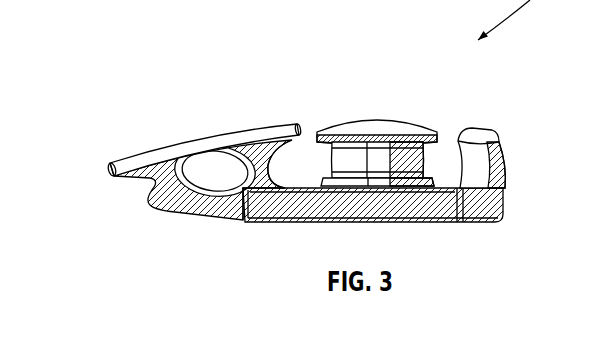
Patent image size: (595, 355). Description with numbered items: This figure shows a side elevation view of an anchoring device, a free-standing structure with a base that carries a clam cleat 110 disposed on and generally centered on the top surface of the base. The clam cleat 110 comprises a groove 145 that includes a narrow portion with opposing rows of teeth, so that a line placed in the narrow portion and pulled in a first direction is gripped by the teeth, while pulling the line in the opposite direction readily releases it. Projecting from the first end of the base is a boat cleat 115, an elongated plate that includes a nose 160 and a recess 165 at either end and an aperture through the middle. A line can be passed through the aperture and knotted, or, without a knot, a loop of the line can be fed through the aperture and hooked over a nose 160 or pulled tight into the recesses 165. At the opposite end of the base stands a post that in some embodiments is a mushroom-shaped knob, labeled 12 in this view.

The clam cleat 110 is at (380, 123).
The boat cleat 115 is at (200, 137).
The groove 145 is at (323, 155).
The nose 160 is at (110, 168).
The recess 165 is at (128, 193).
The end knob 12 is at (483, 130).